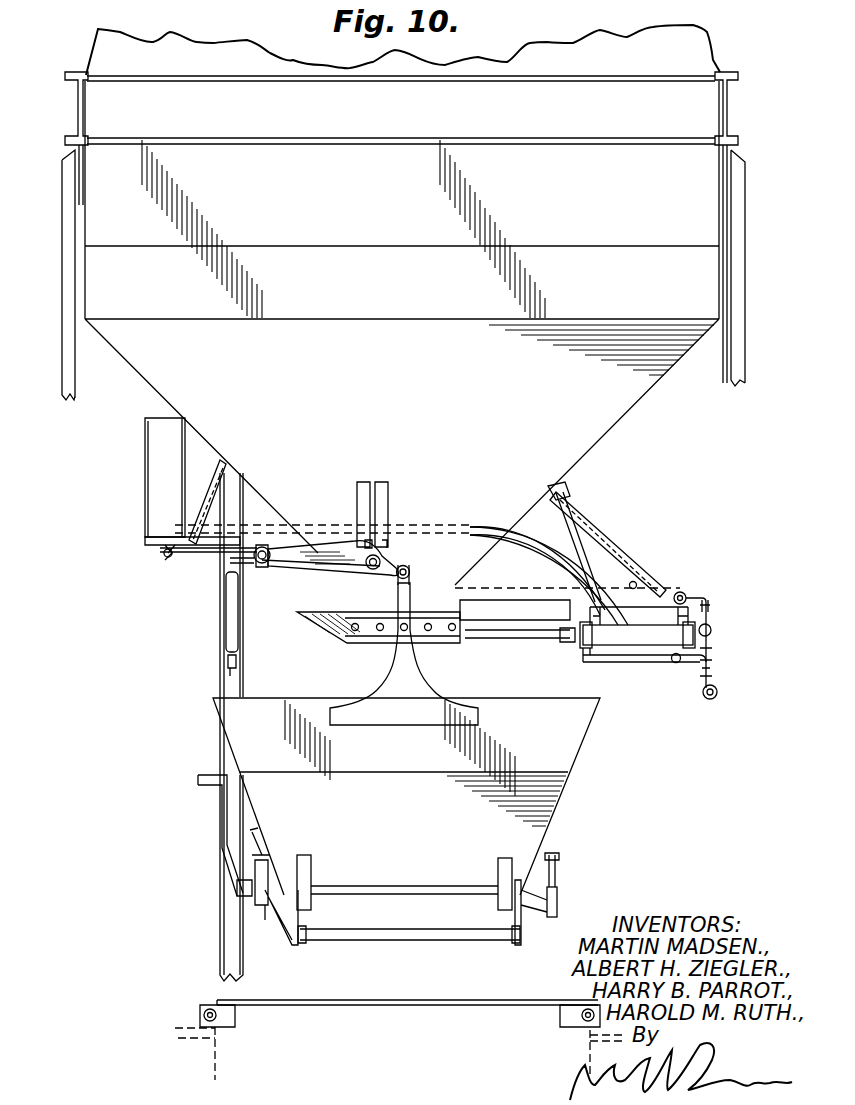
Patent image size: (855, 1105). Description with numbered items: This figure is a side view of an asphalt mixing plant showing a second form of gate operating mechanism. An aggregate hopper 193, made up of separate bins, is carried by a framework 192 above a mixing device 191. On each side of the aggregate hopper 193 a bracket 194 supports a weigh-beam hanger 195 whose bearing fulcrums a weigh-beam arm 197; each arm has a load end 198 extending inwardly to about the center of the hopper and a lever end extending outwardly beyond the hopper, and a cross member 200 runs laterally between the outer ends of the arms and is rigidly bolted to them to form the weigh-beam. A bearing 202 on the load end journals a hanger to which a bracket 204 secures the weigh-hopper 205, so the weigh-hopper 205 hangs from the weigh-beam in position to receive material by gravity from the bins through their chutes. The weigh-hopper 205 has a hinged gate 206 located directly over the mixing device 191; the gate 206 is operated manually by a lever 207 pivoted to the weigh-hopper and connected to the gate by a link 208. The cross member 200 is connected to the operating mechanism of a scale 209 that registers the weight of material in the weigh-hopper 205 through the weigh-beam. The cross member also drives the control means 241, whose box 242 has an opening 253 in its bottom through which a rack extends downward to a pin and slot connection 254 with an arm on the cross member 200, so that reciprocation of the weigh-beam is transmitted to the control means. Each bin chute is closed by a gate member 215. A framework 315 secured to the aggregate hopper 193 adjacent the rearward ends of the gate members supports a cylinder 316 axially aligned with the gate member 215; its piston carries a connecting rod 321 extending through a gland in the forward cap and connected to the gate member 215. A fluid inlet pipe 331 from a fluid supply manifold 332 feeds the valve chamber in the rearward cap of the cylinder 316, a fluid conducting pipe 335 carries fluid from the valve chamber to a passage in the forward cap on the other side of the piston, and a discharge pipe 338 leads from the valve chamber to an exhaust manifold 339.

The mixing device 191 is at (262, 1055).
The framework 192 is at (735, 262).
The aggregate hopper 193 is at (575, 440).
The bracket 194 is at (385, 490).
The weigh-beam hanger 195 is at (385, 557).
The weigh-beam arm 197 is at (318, 553).
The load end 198 is at (392, 572).
The cross member 200 is at (262, 564).
The bearing 202 is at (412, 572).
The bracket 204 is at (403, 668).
The weigh-hopper 205 is at (570, 797).
The hinged gate 206 is at (405, 940).
The lever 207 is at (220, 822).
The link 208 is at (252, 875).
The scale 209 is at (214, 612).
The gate member 215 is at (340, 632).
The control means 241 is at (121, 474).
The box 242 is at (160, 513).
The opening 253 is at (205, 550).
The pin and slot connection 254 is at (170, 556).
The framework 315 is at (605, 545).
The cylinder 316 is at (630, 648).
The connecting rod 321 is at (540, 642).
The fluid inlet pipe 331 is at (710, 615).
The fluid supply manifold 332 is at (683, 597).
The fluid conducting pipe 335 is at (655, 665).
The discharge pipe 338 is at (715, 670).
The exhaust manifold 339 is at (718, 694).